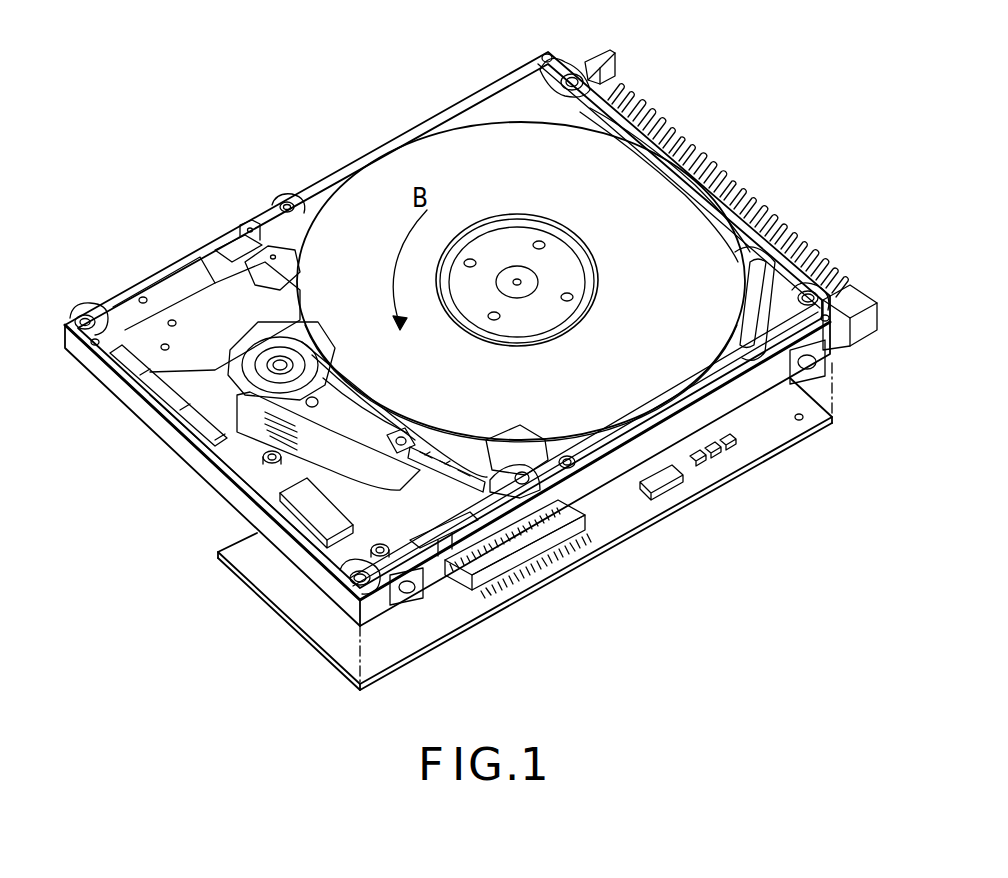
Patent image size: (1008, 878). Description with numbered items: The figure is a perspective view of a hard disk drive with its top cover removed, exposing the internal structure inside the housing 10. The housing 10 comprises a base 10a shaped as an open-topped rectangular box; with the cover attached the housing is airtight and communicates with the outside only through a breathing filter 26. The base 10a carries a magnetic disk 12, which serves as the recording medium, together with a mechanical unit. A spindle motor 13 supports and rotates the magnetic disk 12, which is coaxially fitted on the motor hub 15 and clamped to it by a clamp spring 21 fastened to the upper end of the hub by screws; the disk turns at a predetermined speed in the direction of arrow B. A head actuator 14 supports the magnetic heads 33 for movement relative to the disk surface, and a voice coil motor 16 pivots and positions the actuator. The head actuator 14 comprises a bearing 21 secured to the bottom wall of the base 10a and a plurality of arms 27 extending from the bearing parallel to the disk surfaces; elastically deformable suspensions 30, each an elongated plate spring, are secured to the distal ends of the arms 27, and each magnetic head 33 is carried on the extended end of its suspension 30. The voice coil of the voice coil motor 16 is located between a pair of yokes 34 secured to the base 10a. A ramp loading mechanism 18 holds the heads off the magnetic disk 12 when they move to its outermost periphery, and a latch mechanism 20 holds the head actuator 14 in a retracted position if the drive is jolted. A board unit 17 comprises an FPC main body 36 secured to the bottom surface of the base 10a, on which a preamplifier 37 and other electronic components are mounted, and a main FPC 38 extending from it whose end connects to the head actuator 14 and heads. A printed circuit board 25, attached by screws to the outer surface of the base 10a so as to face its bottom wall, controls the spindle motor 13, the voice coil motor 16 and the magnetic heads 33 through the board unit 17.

The housing 10 is at (502, 67).
The base 10a is at (433, 513).
The magnetic disk 12 is at (432, 150).
The spindle motor 13 is at (600, 283).
The head actuator 14 is at (325, 392).
The spindle hub 15 is at (547, 232).
The voice coil motor 16 is at (180, 282).
The board unit 17 is at (266, 476).
The ramp loading mechanism 18 is at (527, 487).
The latch mechanism 20 is at (241, 246).
The bearing 21 is at (306, 346).
The printed circuit board 25 is at (633, 518).
The breathing filter 26 is at (753, 330).
The arms 27 is at (393, 430).
The suspensions 30 is at (447, 463).
The magnetic heads 33 is at (477, 493).
The yokes 34 is at (167, 378).
The FPC main body 36 is at (345, 548).
The preamplifier 37 is at (307, 502).
The main FPC 38 is at (365, 456).